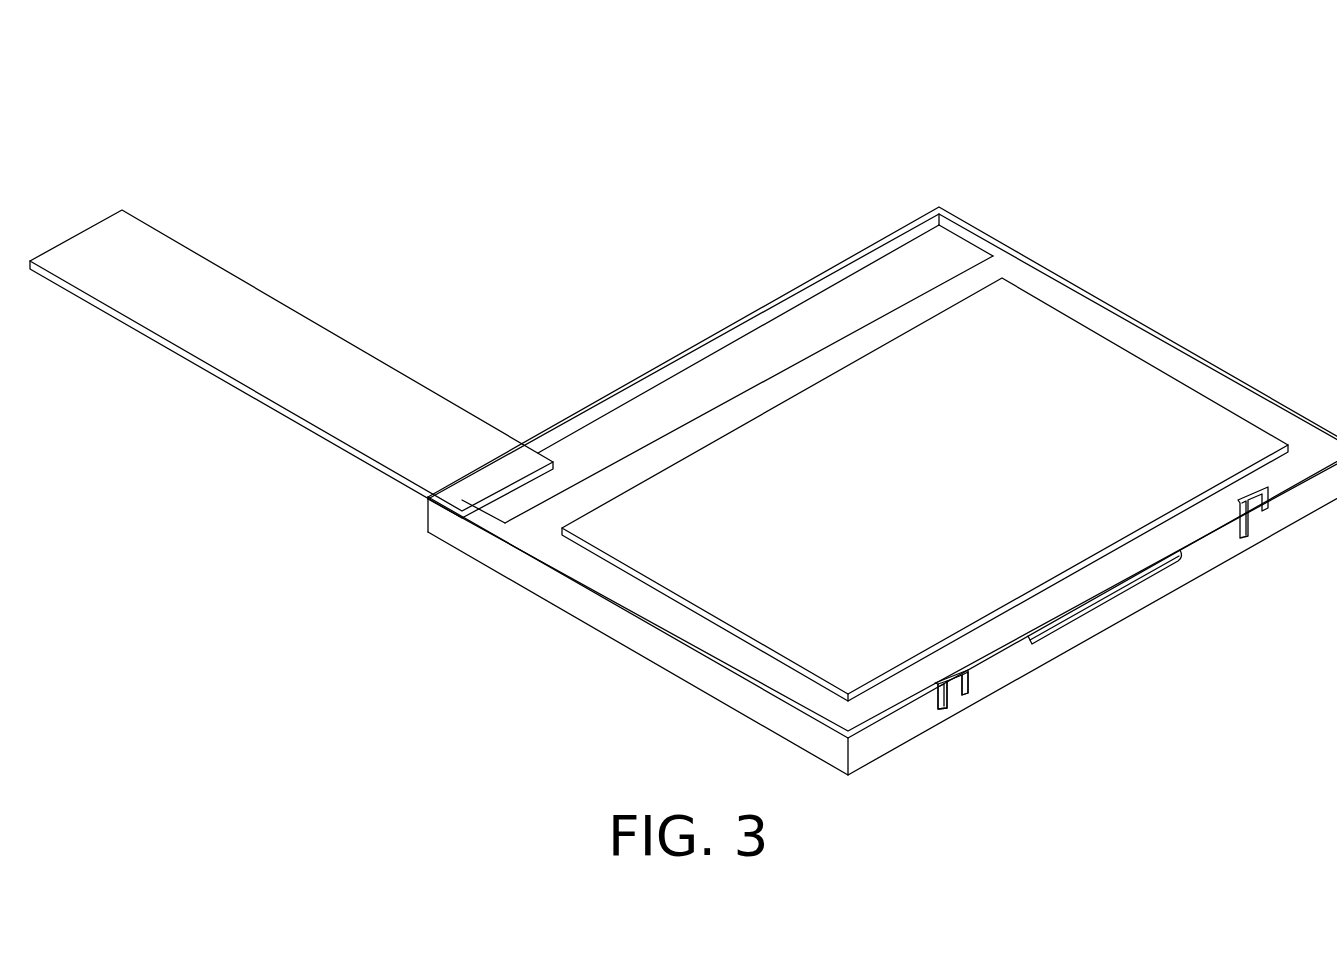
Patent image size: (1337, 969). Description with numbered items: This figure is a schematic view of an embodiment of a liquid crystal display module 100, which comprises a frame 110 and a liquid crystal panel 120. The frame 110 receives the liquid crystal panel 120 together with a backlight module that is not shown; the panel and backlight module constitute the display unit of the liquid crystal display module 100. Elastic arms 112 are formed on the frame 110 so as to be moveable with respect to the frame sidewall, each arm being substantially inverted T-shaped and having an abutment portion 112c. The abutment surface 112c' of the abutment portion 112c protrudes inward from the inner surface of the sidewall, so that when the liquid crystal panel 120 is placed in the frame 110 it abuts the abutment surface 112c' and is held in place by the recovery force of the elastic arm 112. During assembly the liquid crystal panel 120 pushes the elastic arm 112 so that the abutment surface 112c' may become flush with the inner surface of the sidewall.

The liquid crystal display module 100 is at (88, 82).
The frame 110 is at (1112, 622).
The elastic arm 112 is at (960, 708).
The abutment portion 112c is at (1070, 719).
The abutment surface 112c' is at (953, 762).
The liquid crystal panel 120 is at (1117, 378).